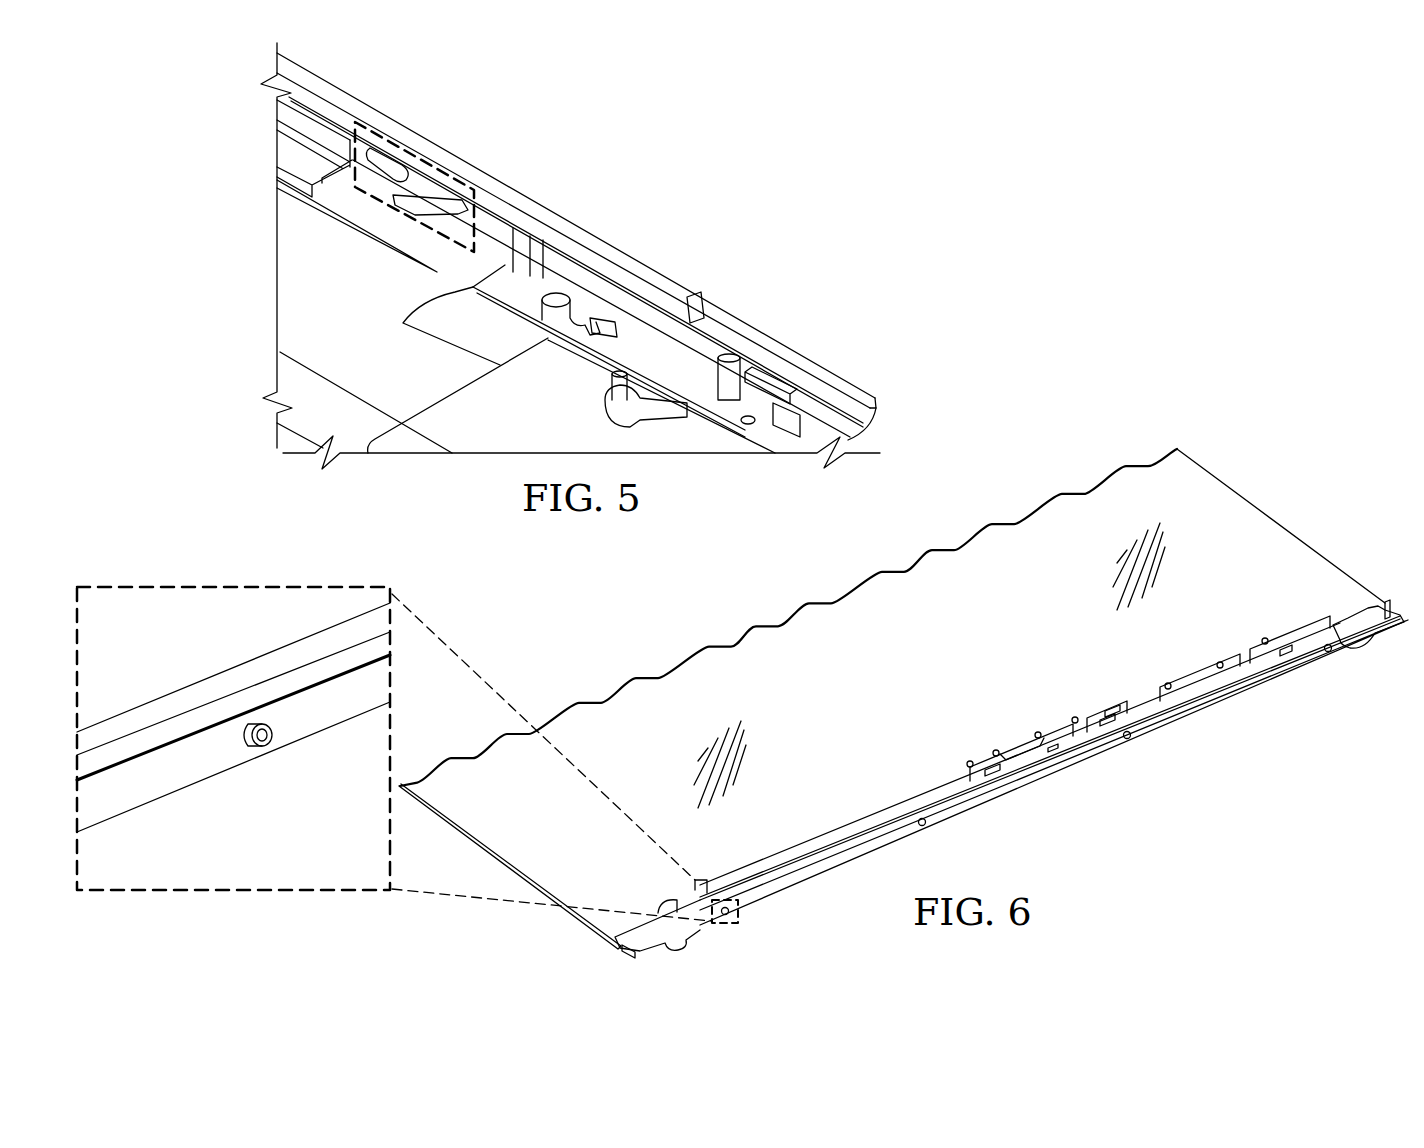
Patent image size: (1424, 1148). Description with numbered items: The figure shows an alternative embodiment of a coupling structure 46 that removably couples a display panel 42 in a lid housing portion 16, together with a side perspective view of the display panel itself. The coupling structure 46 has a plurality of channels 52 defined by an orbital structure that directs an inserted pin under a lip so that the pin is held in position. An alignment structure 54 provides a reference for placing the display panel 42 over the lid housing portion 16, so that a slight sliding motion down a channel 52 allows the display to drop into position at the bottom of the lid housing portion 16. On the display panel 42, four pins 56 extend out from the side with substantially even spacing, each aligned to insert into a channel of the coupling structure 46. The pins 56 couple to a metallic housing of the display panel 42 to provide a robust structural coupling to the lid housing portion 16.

In FIG. 5, the lid housing portion 16 is at (743, 327).
In FIG. 6, the display panel 42 is at (218, 710).
In FIG. 5, the coupling structure 46 is at (620, 257).
In FIG. 5, the channel 52 is at (430, 160).
In FIG. 5, the alignment structure 54 is at (565, 268).
In FIG. 6, the pin 56 is at (272, 738).